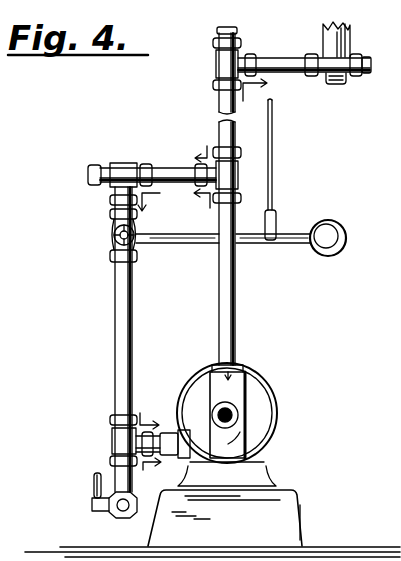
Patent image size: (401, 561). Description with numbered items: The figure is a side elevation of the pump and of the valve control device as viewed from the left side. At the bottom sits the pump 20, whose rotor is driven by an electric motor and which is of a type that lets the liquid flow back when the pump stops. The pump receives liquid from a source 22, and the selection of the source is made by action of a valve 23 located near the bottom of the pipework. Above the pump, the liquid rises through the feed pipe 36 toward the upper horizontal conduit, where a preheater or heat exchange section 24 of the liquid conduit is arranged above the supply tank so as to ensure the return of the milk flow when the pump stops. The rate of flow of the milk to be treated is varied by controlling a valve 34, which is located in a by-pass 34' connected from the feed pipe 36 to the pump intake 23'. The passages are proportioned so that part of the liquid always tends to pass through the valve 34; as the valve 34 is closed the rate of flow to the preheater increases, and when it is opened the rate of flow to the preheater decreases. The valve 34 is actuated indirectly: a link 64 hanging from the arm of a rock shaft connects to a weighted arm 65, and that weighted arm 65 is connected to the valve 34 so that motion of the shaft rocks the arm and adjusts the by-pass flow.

The pump 20 is at (258, 407).
The source 22 is at (112, 514).
The valve 23 is at (75, 487).
The pump intake 23' is at (163, 424).
The preheater or heat exchange section 24 is at (329, 40).
The valve 34 is at (94, 235).
The by-pass 34' is at (129, 327).
The feed pipe 36 is at (229, 318).
The link 64 is at (272, 158).
The weighted arm 65 is at (285, 245).